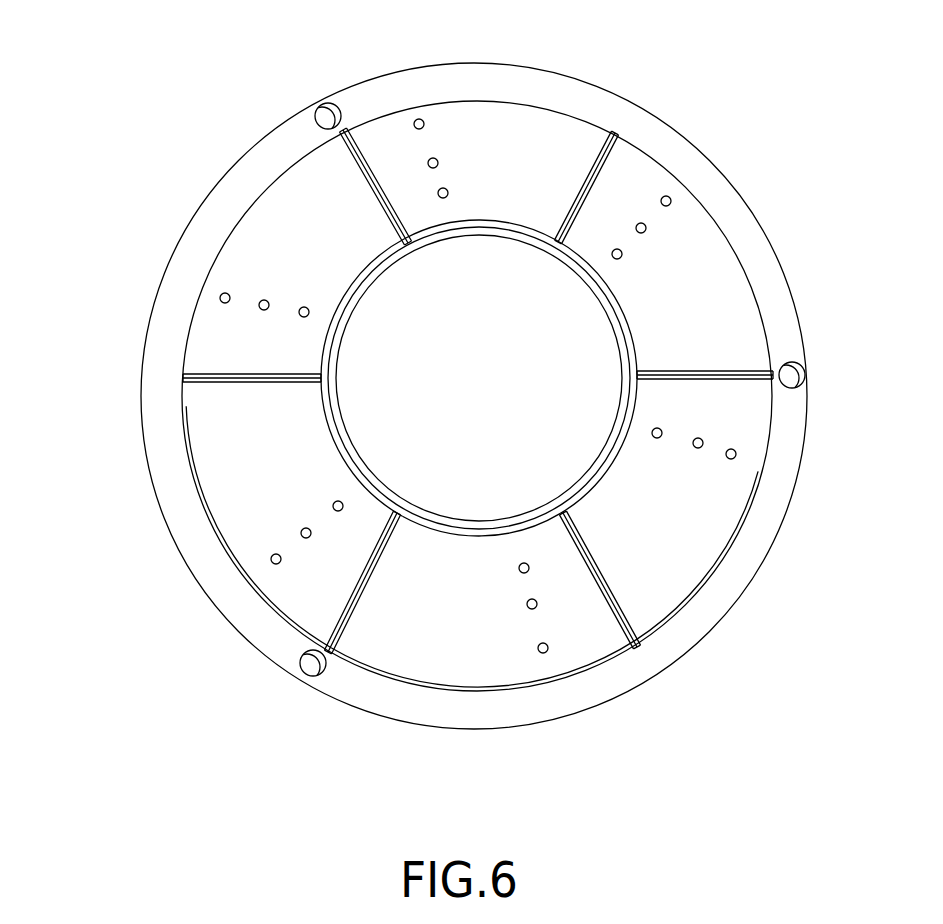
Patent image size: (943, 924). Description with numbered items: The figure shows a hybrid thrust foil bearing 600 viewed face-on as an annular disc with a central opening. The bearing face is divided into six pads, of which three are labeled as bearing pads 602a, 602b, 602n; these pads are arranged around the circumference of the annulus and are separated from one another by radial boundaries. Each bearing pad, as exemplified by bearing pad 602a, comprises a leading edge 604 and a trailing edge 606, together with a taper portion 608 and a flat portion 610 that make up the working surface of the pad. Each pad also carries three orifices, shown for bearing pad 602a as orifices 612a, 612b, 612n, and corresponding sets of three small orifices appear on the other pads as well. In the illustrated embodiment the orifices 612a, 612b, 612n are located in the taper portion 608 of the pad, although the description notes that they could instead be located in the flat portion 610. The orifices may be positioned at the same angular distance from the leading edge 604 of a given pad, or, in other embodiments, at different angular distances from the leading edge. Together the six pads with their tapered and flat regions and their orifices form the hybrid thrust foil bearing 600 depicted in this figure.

The hybrid thrust foil bearing 600 is at (157, 63).
The bearing pad 602a is at (219, 558).
The bearing pad 602b is at (257, 228).
The bearing pad 602n is at (498, 130).
The leading edge 604 is at (385, 494).
The trailing edge 606 is at (213, 380).
The taper portion 608 is at (382, 493).
The flat portion 610 is at (225, 448).
The orifice 612a is at (270, 558).
The orifice 612b is at (306, 539).
The orifice 612n is at (332, 507).